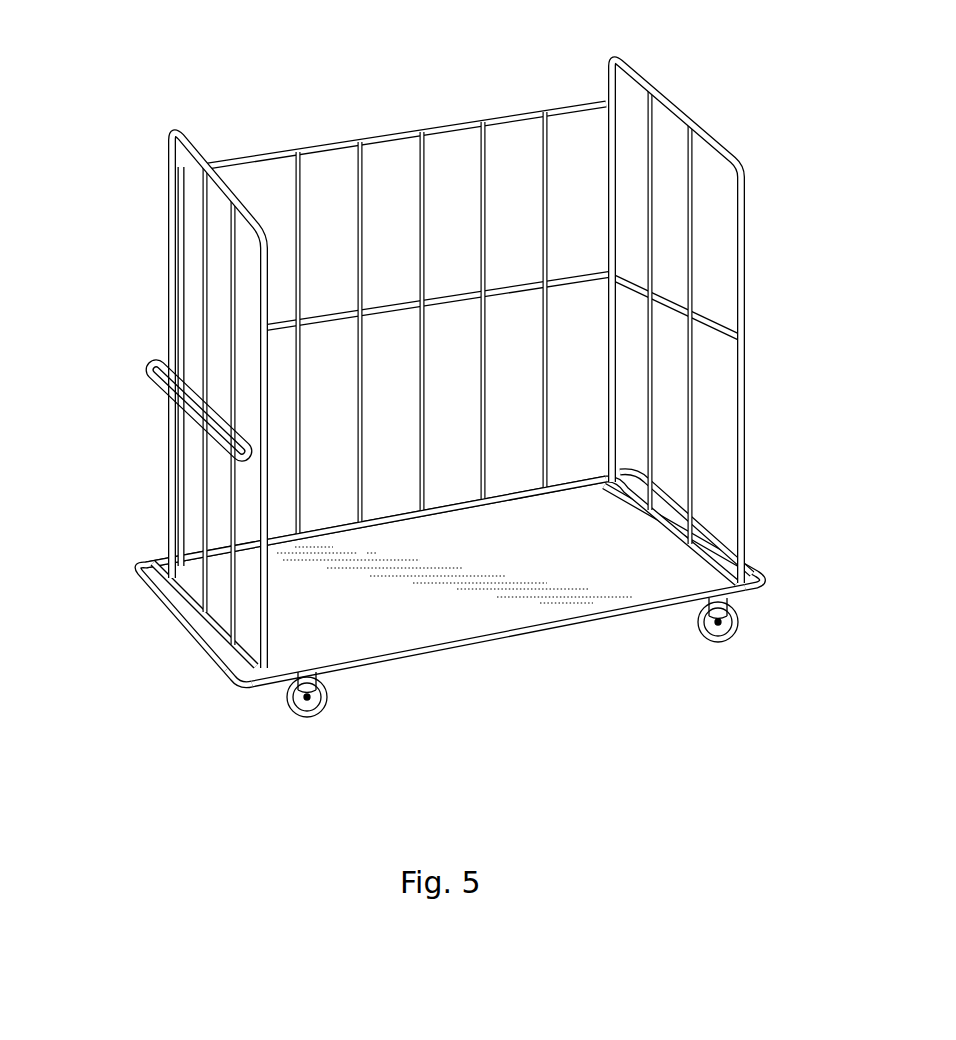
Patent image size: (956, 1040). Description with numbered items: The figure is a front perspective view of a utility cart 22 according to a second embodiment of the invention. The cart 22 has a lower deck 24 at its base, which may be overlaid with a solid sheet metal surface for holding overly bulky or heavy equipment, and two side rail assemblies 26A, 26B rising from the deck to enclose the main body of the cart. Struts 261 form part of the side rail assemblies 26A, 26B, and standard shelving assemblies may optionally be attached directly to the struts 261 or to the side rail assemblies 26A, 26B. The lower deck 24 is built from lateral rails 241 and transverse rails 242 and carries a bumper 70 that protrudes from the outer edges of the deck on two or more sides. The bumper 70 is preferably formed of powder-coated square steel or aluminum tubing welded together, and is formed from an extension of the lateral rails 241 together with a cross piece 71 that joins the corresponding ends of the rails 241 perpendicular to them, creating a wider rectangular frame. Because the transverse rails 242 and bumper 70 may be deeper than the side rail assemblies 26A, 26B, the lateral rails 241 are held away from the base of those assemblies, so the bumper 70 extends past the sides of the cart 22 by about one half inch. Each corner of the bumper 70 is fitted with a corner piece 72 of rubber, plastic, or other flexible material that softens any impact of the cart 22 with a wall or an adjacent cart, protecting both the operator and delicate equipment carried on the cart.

The utility cart 22 is at (278, 108).
The lower deck 24 is at (445, 614).
The lateral rails 241 is at (592, 613).
The transverse rails 242 is at (205, 614).
The side rail assembly 26A is at (263, 326).
The side rail assembly 26B is at (740, 150).
The struts 261 is at (238, 434).
The bumper 70 is at (786, 567).
The cross piece 71 is at (720, 541).
The corner piece 72 is at (238, 683).